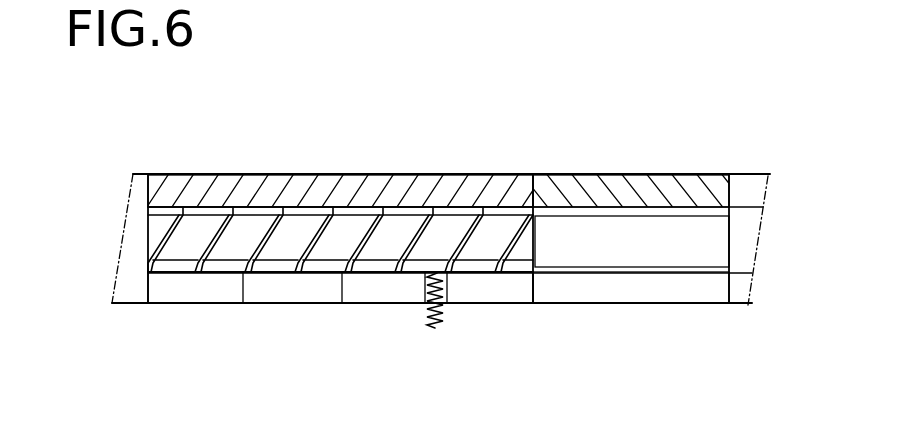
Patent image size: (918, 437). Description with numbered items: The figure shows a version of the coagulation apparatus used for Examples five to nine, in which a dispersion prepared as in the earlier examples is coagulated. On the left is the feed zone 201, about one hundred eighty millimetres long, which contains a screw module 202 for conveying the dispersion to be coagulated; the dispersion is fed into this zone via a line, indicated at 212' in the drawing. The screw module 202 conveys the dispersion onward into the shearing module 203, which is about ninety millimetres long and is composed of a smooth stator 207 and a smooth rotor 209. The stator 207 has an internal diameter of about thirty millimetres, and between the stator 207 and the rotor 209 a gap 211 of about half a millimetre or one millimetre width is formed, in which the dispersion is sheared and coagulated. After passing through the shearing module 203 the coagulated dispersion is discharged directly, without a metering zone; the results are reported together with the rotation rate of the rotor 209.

The feed zone 201 is at (200, 174).
The screw module 202 is at (303, 228).
The shearing module 203 is at (630, 175).
The stator 207 is at (580, 190).
The rotor 209 is at (698, 235).
The gap 211 is at (647, 213).
The resistance / spring element 212' is at (390, 325).